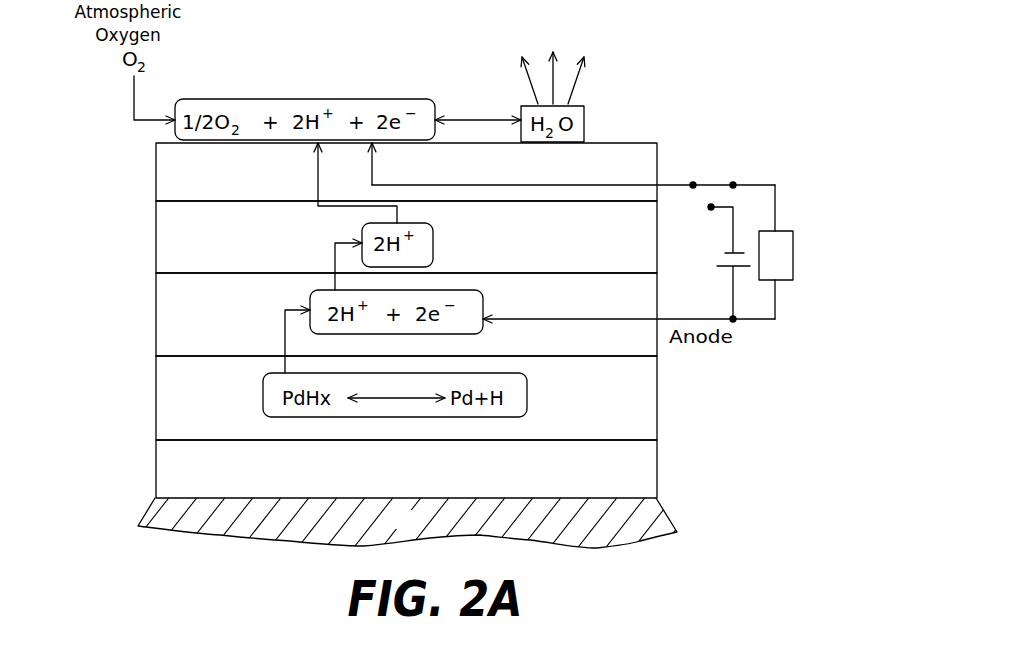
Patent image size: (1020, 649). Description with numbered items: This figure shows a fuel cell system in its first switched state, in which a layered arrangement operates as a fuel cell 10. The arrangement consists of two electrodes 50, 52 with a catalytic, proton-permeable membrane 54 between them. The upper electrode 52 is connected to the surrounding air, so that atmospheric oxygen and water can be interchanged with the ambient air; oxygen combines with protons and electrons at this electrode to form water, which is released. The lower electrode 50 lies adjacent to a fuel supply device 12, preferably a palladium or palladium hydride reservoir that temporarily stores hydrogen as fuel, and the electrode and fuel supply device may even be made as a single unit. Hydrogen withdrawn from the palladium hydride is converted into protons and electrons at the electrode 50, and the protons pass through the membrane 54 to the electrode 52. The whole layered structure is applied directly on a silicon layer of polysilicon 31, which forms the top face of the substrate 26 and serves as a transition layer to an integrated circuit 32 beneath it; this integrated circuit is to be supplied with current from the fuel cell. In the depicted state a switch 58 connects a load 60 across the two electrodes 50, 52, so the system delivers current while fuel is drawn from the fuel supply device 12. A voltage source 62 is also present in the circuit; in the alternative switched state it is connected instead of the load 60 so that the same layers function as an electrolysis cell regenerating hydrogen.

The fuel cell 10 is at (392, 316).
The fuel supply device 12 is at (657, 408).
The substrate 26 is at (392, 427).
The polysilicon 31 is at (657, 473).
The integrated circuit 32 is at (658, 537).
The electrode 50 is at (156, 292).
The electrode 52 is at (156, 160).
The membrane 54 is at (156, 248).
The switch 58 is at (716, 184).
The load 60 is at (787, 228).
The voltage source 62 is at (726, 252).